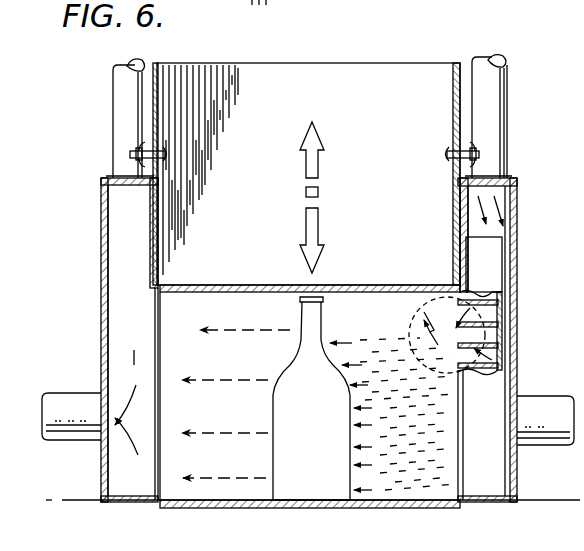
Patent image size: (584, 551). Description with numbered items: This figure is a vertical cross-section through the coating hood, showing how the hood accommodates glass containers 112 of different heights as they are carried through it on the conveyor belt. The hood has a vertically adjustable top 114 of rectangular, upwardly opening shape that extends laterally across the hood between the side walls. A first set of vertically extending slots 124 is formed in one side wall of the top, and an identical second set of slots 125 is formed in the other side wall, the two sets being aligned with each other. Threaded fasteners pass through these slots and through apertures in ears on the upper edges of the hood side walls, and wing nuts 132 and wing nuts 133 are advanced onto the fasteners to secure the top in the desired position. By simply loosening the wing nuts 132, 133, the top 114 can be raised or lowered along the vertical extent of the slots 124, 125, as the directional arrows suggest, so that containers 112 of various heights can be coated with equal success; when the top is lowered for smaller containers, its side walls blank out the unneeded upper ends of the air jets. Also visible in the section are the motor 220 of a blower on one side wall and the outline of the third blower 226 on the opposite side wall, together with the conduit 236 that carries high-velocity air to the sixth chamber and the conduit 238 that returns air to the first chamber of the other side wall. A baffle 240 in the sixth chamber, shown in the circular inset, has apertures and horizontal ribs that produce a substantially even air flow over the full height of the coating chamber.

The glass containers 112 is at (326, 340).
The vertically adjustable top 114 is at (352, 63).
The first set of vertically extending slots 124 is at (453, 90).
The second set of vertically extending slots 125 is at (162, 95).
The wing nuts 132 is at (478, 146).
The wing nuts 133 is at (137, 144).
The motor 220 is at (546, 402).
The third blower 226 is at (66, 400).
The conduit 236 is at (504, 98).
The conduit 238 is at (118, 82).
The baffle 240 is at (504, 312).